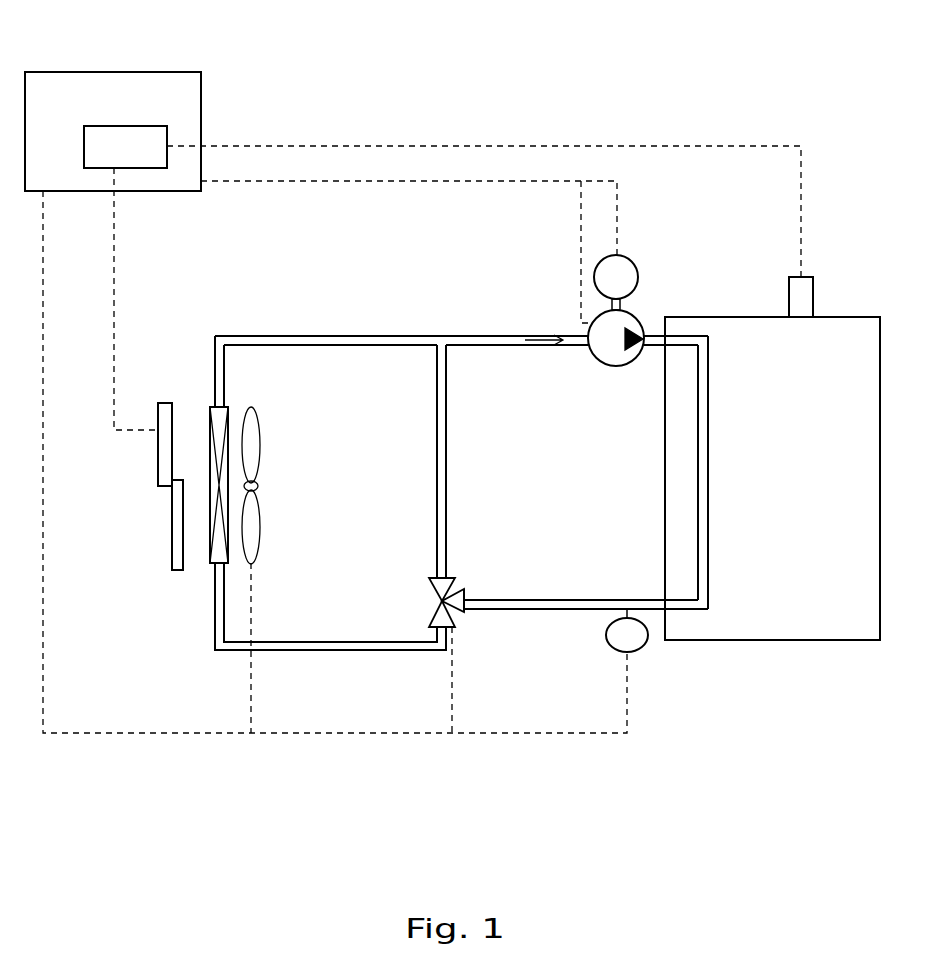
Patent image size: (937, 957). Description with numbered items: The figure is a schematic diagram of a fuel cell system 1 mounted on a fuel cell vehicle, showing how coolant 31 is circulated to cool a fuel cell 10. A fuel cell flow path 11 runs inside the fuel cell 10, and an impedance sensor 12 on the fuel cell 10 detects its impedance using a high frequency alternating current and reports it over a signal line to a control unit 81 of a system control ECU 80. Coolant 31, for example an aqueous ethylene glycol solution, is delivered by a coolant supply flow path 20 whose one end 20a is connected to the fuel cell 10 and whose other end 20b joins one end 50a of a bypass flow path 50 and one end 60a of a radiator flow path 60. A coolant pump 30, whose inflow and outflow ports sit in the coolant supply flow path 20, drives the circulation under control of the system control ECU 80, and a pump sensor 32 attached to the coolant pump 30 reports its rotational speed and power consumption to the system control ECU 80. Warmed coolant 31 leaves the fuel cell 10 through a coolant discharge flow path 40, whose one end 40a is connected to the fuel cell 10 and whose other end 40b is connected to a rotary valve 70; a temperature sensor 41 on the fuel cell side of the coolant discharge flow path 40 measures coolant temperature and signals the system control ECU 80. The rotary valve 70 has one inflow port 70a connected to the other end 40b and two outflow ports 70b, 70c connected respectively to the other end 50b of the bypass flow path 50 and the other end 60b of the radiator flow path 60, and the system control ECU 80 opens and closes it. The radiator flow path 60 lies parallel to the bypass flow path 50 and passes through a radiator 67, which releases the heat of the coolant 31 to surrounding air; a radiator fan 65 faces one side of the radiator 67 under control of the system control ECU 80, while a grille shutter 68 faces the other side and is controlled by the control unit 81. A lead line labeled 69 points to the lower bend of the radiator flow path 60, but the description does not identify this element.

The fuel cell system 1 is at (757, 97).
The fuel cell 10 is at (845, 317).
The fuel cell flow path 11 is at (710, 358).
The impedance sensor 12 is at (810, 277).
The coolant supply flow path 20 is at (515, 336).
The one end of the coolant supply flow path 20a is at (658, 350).
The other end of the coolant supply flow path 20b is at (448, 347).
The coolant pump 30 is at (640, 316).
The coolant 31 is at (540, 333).
The pump sensor 32 is at (628, 256).
The coolant discharge flow path 40 is at (552, 610).
The one end of the coolant discharge flow path 40a is at (665, 602).
The other end of the coolant discharge flow path 40b is at (466, 596).
The temperature sensor 41 is at (642, 650).
The bypass flow path 50 is at (437, 410).
The one end of the bypass flow path 50a is at (428, 352).
The other end of the bypass flow path 50b is at (437, 578).
The radiator flow path 60 is at (318, 650).
The one end of the radiator flow path 60a is at (434, 336).
The other end of the radiator flow path 60b is at (433, 613).
The radiator fan 65 is at (258, 563).
The radiator 67 is at (210, 410).
The grille shutter 68 is at (162, 566).
The pipe bend portion 69 is at (218, 650).
The rotary valve 70 is at (452, 630).
The inflow port 70a is at (460, 611).
The outflow port 70b is at (430, 585).
The outflow port 70c is at (432, 603).
The system control ECU 80 is at (78, 72).
The control unit 81 is at (103, 126).